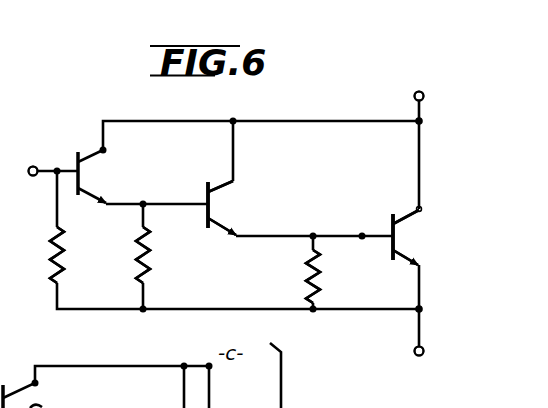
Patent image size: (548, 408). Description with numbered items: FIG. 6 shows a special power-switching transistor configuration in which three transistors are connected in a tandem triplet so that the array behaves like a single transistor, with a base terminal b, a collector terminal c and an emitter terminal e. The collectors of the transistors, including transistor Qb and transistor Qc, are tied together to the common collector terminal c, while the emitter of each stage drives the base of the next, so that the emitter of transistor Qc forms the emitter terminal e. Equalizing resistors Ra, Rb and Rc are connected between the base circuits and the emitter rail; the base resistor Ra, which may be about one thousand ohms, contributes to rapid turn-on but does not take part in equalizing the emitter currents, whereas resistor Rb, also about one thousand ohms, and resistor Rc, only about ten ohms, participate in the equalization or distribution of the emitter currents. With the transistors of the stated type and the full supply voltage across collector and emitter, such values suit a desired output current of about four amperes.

The base terminal b is at (28, 153).
The collector terminal c is at (410, 84).
The emitter terminal e is at (401, 360).
The equalizing resistor Ra is at (73, 255).
The equalizing resistor Rb is at (162, 255).
The equalizing resistor Rc is at (330, 276).
The transistor Qb is at (239, 208).
The transistor Qc is at (416, 237).